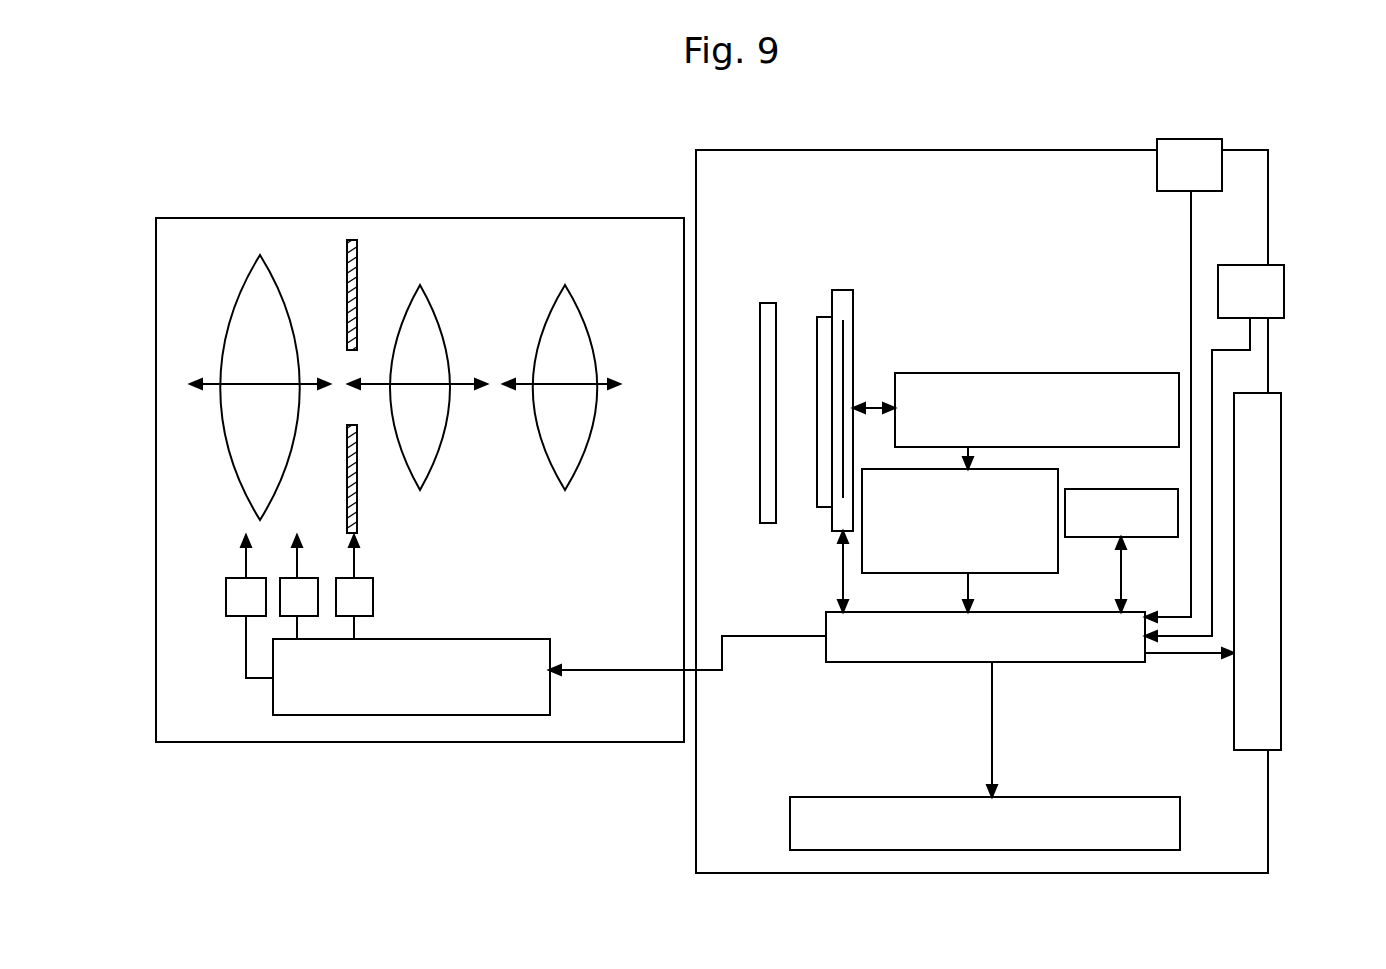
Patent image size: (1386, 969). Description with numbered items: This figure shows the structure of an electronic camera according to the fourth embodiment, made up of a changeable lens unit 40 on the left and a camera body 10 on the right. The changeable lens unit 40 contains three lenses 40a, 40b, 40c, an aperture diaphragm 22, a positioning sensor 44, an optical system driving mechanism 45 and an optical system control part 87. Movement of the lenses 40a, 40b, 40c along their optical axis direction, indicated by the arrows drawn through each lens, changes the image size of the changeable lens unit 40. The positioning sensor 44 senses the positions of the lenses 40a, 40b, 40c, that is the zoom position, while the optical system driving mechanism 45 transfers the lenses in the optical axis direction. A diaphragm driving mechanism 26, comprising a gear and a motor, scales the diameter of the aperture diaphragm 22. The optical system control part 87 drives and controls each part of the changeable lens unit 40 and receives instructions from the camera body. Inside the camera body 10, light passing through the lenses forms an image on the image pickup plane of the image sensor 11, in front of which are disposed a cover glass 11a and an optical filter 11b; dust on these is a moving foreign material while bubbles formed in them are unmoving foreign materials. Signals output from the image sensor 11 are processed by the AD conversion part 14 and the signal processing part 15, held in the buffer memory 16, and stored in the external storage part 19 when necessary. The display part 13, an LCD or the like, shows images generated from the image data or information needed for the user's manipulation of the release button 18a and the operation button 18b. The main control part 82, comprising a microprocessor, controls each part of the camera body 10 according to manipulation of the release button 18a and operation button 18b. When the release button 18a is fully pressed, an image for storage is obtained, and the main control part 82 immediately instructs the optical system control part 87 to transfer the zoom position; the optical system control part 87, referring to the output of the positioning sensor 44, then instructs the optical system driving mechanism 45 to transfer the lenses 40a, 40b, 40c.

The camera body 10 is at (723, 165).
The image sensor 11 is at (852, 300).
The cover glass 11a is at (823, 317).
The optical filter 11b is at (768, 303).
The display part 13 is at (1270, 508).
The AD conversion part 14 is at (1060, 373).
The signal processing part 15 is at (1058, 567).
The buffer memory 16 is at (1152, 537).
The release button 18a is at (1190, 148).
The operation button 18b is at (1284, 288).
The external storage part 19 is at (1182, 825).
The aperture diaphragm 22 is at (358, 274).
The diaphragm driving mechanism 26 is at (374, 594).
The changeable lens unit 40 is at (172, 222).
The lens 40a is at (282, 297).
The lens 40b is at (430, 327).
The lens 40c is at (577, 326).
The positioning sensor 44 is at (282, 603).
The optical system driving mechanism 45 is at (226, 600).
The main control part 82 is at (1097, 664).
The optical system control part 87 is at (518, 639).